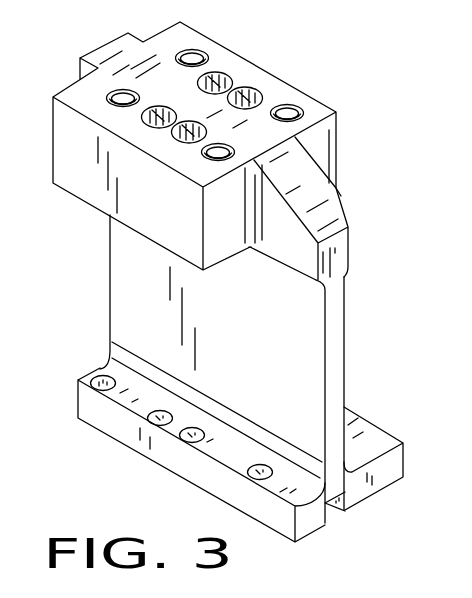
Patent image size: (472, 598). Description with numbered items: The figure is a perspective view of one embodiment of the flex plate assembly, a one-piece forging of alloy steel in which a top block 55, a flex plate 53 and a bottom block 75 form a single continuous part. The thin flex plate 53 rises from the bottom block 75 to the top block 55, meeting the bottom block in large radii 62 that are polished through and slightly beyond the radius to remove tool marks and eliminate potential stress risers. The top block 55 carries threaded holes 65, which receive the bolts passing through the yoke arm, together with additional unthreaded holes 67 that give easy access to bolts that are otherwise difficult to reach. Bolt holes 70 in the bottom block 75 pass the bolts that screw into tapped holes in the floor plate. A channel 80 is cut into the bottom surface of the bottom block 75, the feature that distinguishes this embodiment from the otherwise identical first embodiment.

The flex plate 53 is at (266, 325).
The top block 55 is at (289, 89).
The large radii 62 is at (350, 465).
The threaded holes 65 is at (122, 91).
The unthreaded holes 67 is at (172, 130).
The bolt holes 70 is at (101, 377).
The bottom block 75 is at (368, 427).
The channel 80 is at (335, 510).